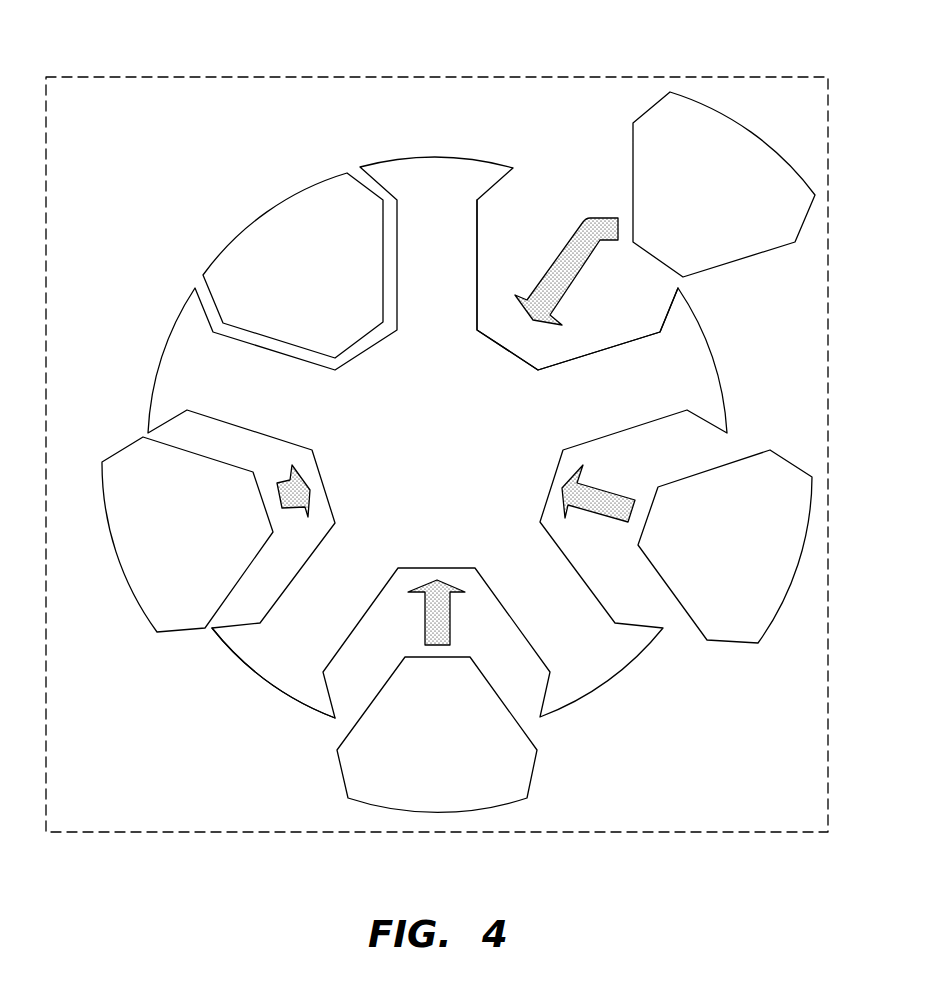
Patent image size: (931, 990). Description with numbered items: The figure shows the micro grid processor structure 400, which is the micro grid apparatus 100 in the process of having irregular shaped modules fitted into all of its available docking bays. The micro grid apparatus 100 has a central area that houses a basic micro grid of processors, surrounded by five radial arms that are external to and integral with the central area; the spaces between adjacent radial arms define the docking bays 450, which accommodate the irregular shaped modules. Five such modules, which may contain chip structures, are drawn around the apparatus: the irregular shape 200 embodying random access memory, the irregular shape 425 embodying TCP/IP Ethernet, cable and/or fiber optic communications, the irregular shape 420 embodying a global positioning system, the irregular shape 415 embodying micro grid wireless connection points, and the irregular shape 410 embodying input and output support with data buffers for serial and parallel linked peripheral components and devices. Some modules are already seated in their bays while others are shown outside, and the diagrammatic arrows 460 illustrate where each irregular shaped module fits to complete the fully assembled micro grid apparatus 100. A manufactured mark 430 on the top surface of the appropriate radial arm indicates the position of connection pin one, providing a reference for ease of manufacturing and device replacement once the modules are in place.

The micro grid processor structure 400 is at (81, 84).
The micro grid apparatus 100 is at (165, 342).
The irregular shape 200 is at (316, 196).
The irregular shape 410 is at (173, 623).
The irregular shape 415 is at (523, 775).
The irregular shape 420 is at (732, 635).
The irregular shape 425 is at (640, 152).
The manufactured mark 430 is at (300, 693).
The docking bays 450 is at (633, 315).
The diagrammatic arrows 460 is at (543, 289).